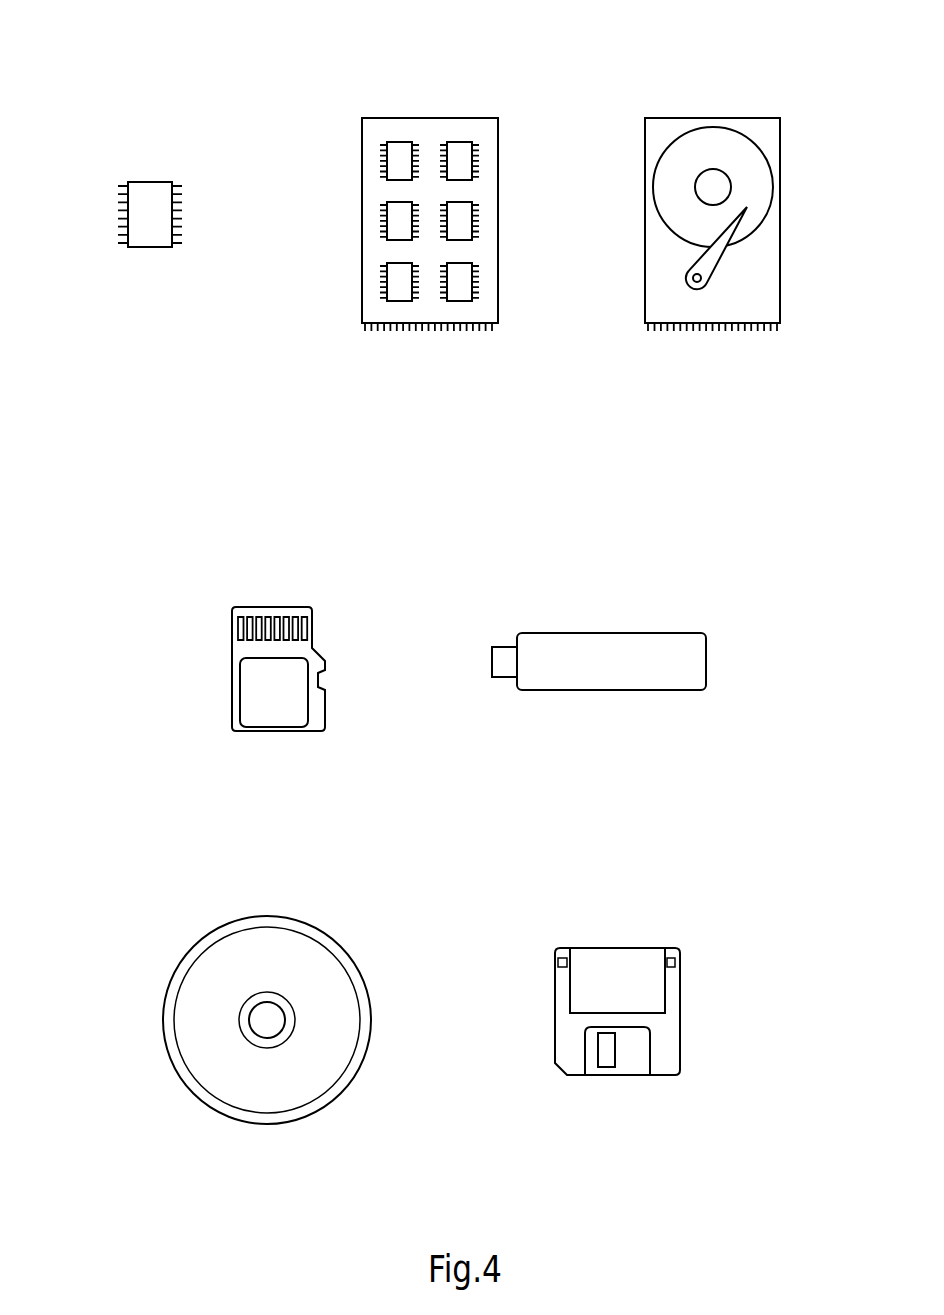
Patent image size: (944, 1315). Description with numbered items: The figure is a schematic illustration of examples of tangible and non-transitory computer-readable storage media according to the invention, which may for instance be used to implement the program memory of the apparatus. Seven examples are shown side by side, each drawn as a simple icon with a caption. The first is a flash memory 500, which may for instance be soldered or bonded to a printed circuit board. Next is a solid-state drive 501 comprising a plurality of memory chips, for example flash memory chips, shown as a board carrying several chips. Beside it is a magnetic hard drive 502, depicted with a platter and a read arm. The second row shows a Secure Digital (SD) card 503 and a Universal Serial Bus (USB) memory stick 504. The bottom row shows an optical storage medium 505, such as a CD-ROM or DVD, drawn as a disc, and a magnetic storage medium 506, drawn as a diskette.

The flash memory 500 is at (175, 143).
The solid-state drive 501 is at (498, 82).
The magnetic hard drive 502 is at (783, 82).
The Secure Digital (SD) card 503 is at (313, 575).
The Universal Serial Bus (USB) memory stick 504 is at (680, 595).
The optical storage medium 505 is at (350, 912).
The magnetic storage medium 506 is at (673, 912).